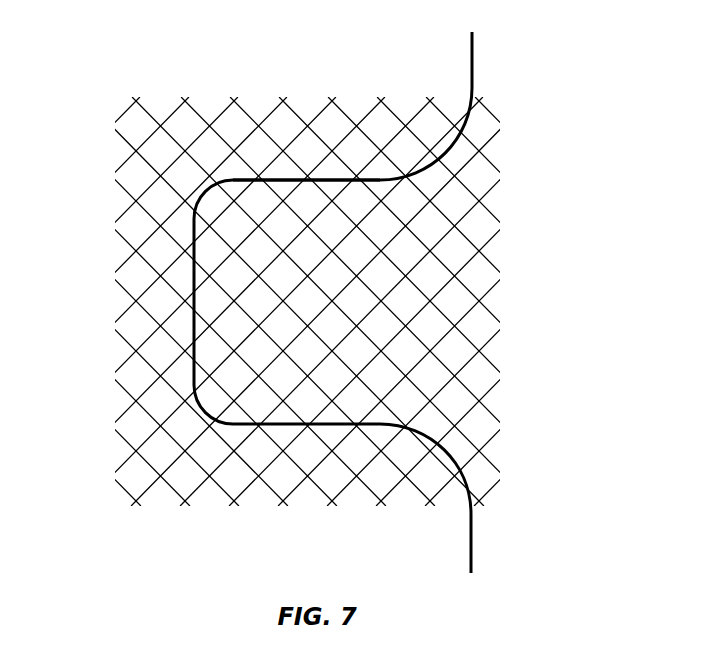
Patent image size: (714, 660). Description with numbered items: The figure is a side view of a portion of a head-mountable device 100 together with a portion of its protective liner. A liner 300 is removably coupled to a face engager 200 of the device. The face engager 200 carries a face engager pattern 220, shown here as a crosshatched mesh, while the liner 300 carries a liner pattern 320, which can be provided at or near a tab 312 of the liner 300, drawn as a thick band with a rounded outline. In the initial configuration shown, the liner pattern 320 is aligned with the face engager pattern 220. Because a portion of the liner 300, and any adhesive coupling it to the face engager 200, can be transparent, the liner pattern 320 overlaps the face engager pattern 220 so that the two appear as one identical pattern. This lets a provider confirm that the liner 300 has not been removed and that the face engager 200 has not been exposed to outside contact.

The head-mountable device 100 is at (47, 104).
The face engager 200 is at (175, 132).
The face engager pattern 220 is at (250, 122).
The liner 300 is at (195, 286).
The tab 312 is at (343, 180).
The liner pattern 320 is at (443, 215).